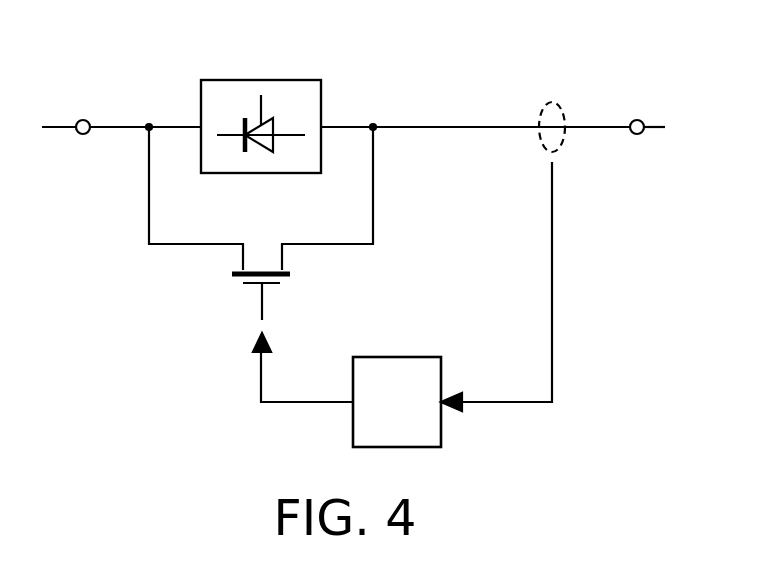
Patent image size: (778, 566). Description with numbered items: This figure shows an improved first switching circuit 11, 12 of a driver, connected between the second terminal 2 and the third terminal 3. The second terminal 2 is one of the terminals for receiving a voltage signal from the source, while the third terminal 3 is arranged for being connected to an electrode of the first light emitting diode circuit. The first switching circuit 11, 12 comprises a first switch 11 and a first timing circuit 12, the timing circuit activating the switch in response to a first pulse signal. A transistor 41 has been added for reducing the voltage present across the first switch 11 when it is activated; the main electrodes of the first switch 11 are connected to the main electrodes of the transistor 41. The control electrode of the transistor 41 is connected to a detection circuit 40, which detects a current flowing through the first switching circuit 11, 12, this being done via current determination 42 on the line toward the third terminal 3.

The second terminal 2 is at (83, 120).
The third terminal 3 is at (637, 120).
The first switch 11 is at (242, 80).
The first timing circuit 12 is at (261, 126).
The detection circuit 40 is at (398, 357).
The transistor 41 is at (242, 255).
The current determination 42 is at (552, 102).